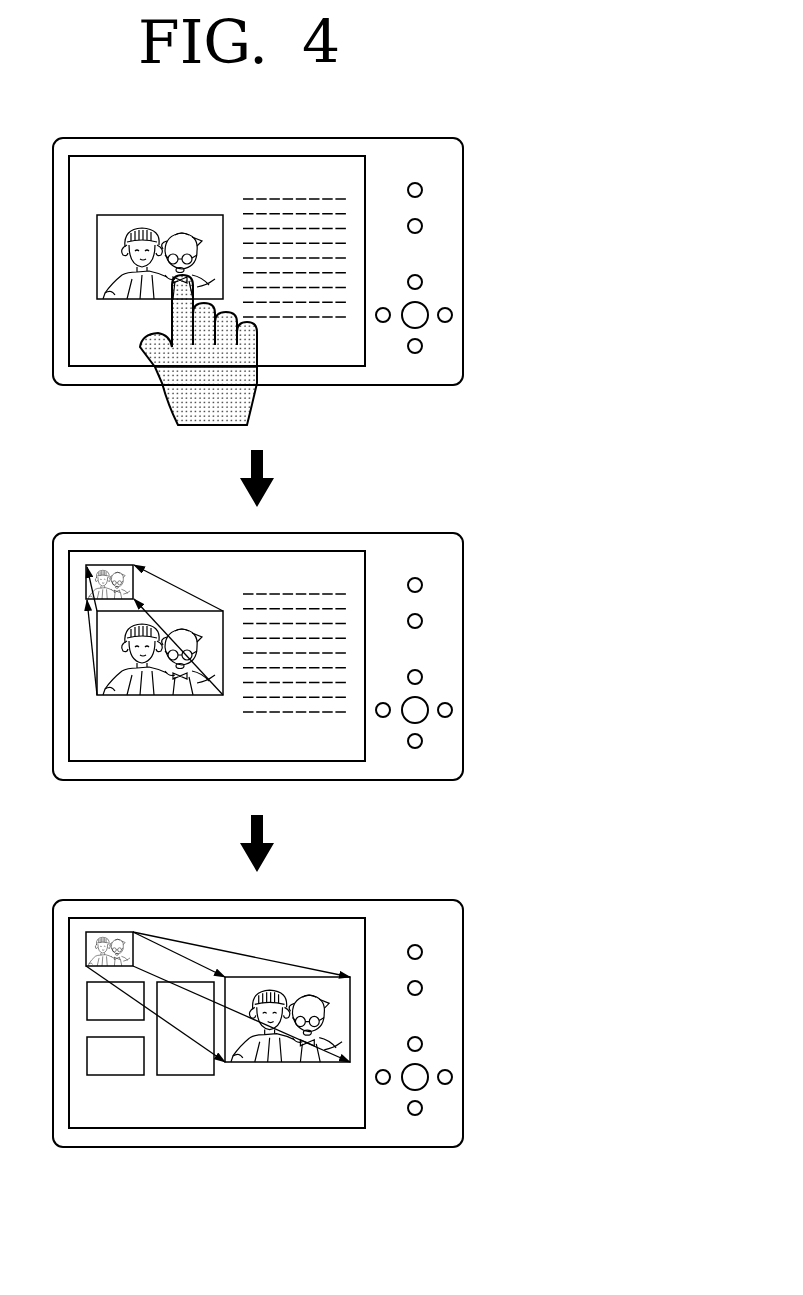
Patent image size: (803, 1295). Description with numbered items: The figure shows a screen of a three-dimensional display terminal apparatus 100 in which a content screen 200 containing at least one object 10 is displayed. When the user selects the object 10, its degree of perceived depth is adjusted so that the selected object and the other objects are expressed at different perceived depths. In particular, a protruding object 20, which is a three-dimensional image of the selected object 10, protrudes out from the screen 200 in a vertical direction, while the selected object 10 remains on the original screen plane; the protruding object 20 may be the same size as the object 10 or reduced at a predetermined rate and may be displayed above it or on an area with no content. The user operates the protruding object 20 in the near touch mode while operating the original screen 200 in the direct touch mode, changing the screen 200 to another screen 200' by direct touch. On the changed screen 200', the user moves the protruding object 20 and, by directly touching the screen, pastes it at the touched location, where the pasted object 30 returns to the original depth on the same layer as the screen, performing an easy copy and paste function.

The 3D display terminal apparatus 100 is at (395, 138).
The content screen 200 is at (217, 423).
The changed screen 200' is at (217, 988).
The object 10 is at (183, 215).
The protruding object 20 is at (103, 565).
The enlarged image 30 is at (303, 1062).